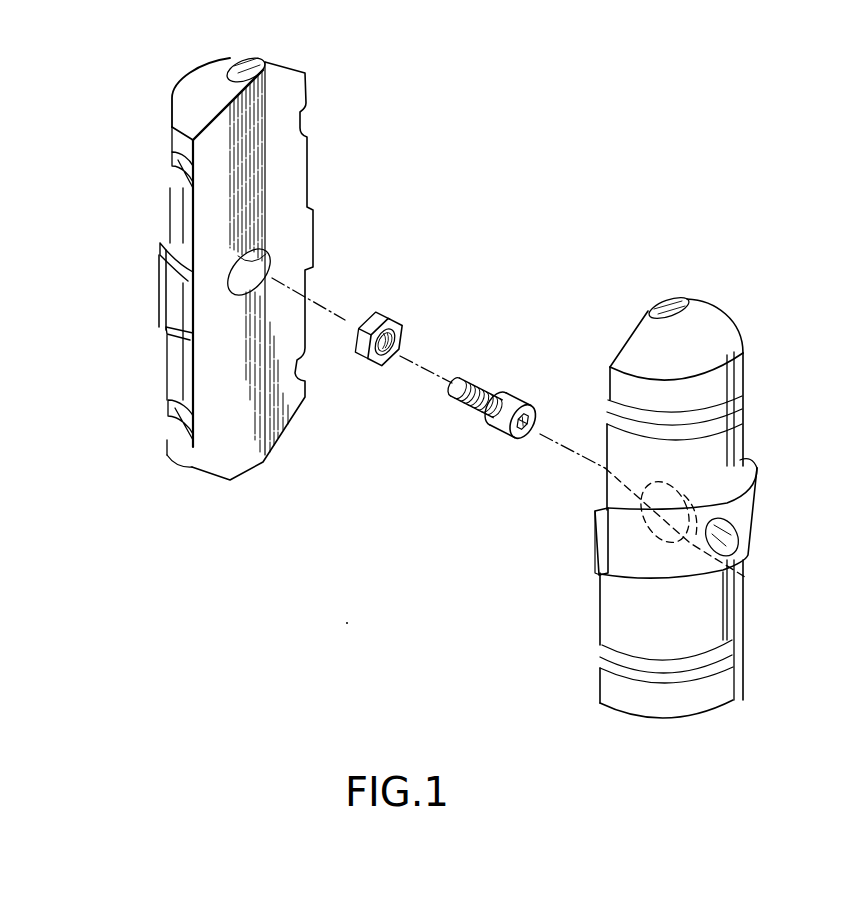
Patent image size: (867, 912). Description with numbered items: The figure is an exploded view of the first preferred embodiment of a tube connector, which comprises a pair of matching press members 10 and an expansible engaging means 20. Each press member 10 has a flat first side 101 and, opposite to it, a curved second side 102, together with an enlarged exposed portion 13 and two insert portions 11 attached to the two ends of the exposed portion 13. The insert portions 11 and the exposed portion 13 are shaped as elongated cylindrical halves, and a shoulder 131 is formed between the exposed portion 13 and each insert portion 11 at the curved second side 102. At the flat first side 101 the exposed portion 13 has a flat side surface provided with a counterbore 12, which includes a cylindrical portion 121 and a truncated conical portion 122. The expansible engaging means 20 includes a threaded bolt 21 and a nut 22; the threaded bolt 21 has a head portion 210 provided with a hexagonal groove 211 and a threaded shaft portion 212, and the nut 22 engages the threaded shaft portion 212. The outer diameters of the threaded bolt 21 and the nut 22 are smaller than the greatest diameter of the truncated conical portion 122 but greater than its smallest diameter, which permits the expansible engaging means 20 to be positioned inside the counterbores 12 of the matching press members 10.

The press member 10 is at (207, 307).
The insert portion 11 is at (180, 136).
The flat first side 101 is at (290, 170).
The curved second side 102 is at (176, 217).
The counterbore 12 is at (270, 268).
The exposed portion 13 is at (173, 297).
The shoulder 131 is at (160, 249).
The cylindrical portion 121 is at (745, 577).
The truncated conical portion 122 is at (643, 500).
The expansible engaging means 20 is at (523, 265).
The threaded bolt 21 is at (482, 411).
The nut 22 is at (396, 312).
The head portion 210 is at (528, 410).
The hexagonal groove 211 is at (508, 432).
The threaded shaft portion 212 is at (458, 408).